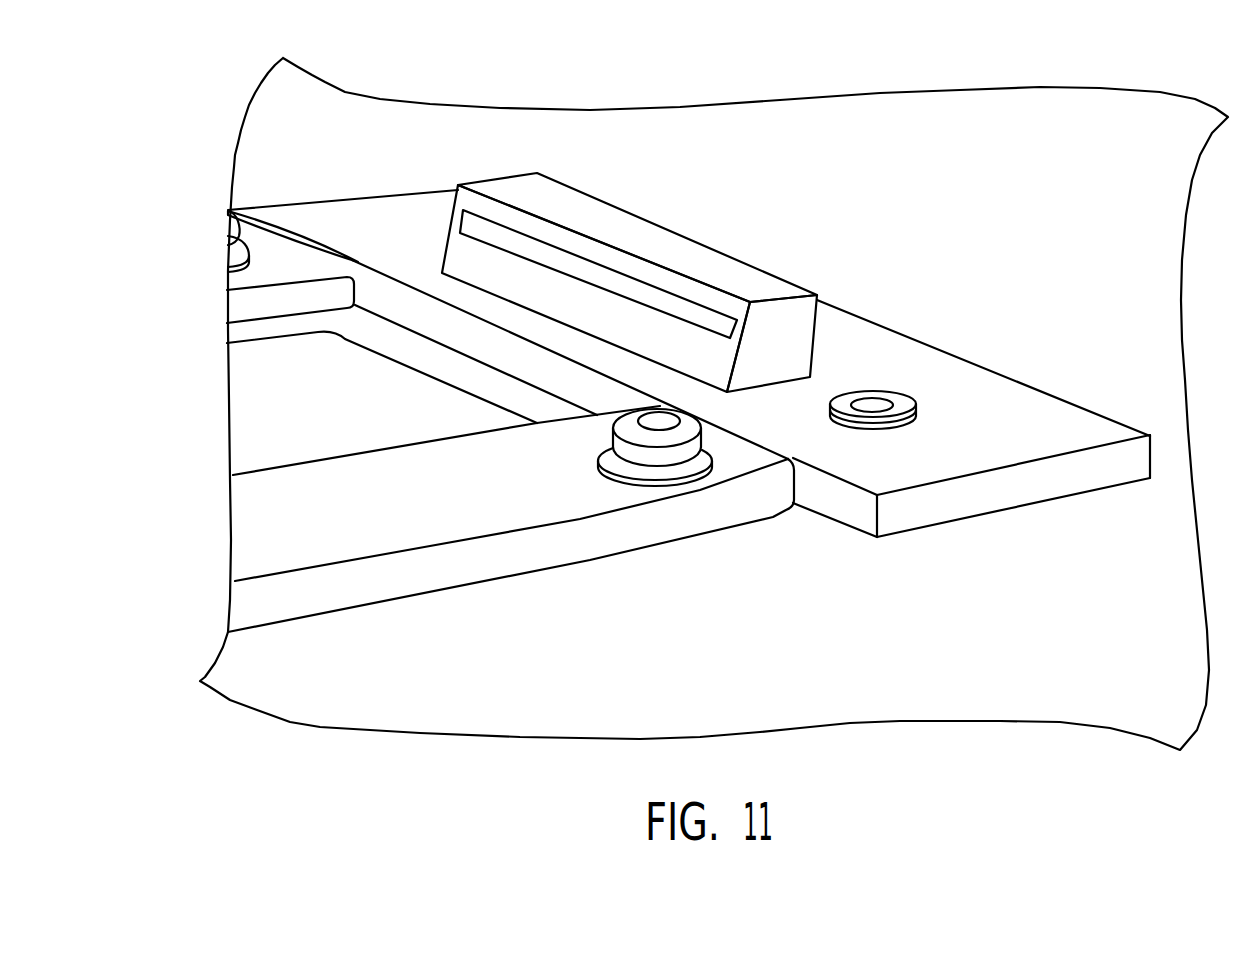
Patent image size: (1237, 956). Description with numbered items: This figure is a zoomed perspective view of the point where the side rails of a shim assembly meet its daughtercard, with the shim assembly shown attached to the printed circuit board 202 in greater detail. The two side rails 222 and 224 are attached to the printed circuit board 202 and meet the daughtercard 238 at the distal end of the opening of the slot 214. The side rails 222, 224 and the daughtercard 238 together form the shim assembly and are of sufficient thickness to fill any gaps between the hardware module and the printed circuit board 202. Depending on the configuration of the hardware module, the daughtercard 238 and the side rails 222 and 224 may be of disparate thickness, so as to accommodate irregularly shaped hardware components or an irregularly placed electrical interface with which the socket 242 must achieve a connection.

The printed circuit board 202 is at (850, 593).
The slot 214 is at (243, 415).
The side rail 222 is at (490, 500).
The side rail 224 is at (264, 240).
The daughtercard 238 is at (900, 358).
The socket 242 is at (687, 254).